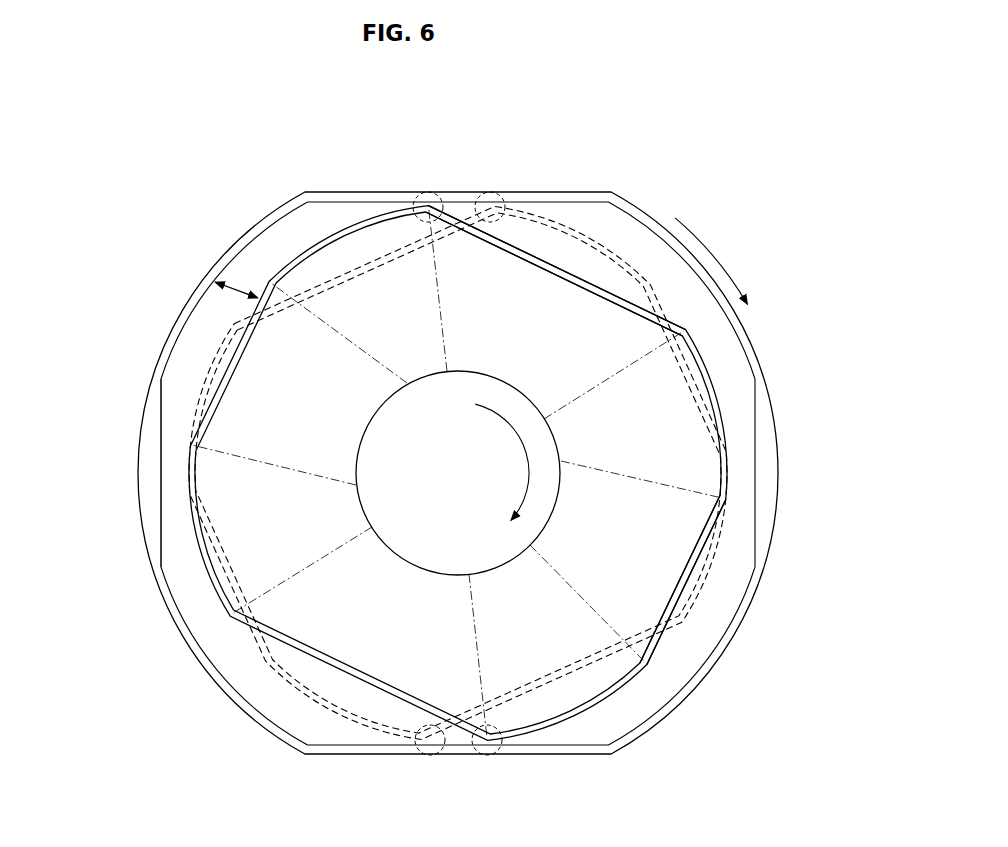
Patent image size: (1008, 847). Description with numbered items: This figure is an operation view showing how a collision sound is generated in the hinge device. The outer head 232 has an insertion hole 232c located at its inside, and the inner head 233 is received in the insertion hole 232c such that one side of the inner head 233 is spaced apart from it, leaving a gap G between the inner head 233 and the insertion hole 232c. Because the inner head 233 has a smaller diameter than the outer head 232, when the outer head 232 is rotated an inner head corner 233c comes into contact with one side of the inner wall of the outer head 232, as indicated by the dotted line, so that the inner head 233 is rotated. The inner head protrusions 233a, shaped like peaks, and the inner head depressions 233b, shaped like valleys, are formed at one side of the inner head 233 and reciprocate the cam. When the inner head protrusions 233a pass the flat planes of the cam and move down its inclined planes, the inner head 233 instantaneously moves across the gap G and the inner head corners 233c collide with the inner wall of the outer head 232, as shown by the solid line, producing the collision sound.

The outer head 232 is at (767, 457).
The insertion hole 232c is at (183, 377).
The inner head 233 is at (192, 584).
The inner head protrusions 233a is at (548, 335).
The inner head depressions 233b is at (633, 563).
The inner head corner 233c is at (488, 194).
The gap G is at (236, 288).